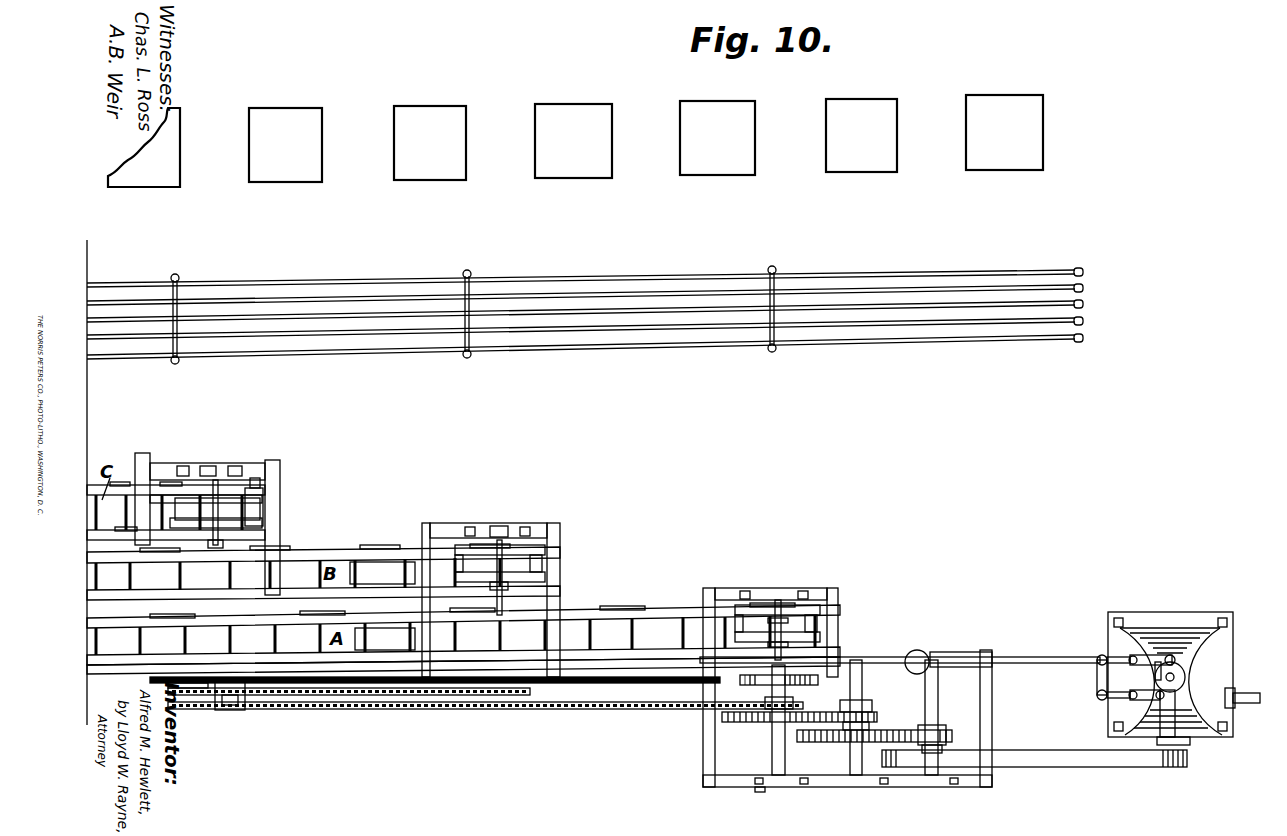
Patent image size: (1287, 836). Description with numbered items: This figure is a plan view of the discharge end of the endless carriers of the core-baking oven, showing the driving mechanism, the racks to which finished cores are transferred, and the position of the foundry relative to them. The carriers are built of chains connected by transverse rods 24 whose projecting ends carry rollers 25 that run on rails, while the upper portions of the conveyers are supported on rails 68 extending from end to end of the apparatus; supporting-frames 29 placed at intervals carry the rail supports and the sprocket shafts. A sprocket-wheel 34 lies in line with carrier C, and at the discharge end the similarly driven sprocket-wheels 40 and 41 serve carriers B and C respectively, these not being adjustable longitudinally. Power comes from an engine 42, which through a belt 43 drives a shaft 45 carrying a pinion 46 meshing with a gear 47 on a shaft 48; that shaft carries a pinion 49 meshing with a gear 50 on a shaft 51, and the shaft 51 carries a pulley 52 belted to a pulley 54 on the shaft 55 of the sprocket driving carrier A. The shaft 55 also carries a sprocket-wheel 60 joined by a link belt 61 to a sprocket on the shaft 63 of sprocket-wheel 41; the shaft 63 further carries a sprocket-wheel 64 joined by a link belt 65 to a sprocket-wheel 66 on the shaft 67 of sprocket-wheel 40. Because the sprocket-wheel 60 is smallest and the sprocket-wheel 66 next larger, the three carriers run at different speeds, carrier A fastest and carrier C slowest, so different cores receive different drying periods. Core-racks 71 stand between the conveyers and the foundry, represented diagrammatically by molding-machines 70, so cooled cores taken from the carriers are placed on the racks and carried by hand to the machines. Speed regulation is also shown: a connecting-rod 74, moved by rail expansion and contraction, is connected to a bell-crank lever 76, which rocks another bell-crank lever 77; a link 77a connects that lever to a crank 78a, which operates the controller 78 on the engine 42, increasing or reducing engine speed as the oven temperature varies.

The molding-machines 70 is at (575, 141).
The core-racks 71 is at (337, 300).
The supporting-frames 29 is at (258, 462).
The rollers 25 is at (128, 482).
The transverse rods 24 is at (176, 508).
The rails 68 is at (105, 540).
The shaft 63 is at (212, 578).
The sprocket-wheel 64 is at (238, 697).
The link belt 61 is at (380, 703).
The link belt 65 is at (412, 695).
The sprocket-wheel 66 is at (535, 690).
The sprocket-wheel 41 is at (265, 503).
The sprocket-wheel 40 is at (552, 568).
The shaft 67 is at (502, 604).
The sprocket-wheel 34 is at (808, 640).
The shaft 55 is at (768, 625).
The connecting-rod 74 is at (300, 672).
The pulley 54 is at (740, 681).
The sprocket-wheel 60 is at (793, 703).
The gear 50 is at (755, 722).
The shaft 51 is at (772, 748).
The pulley 52 is at (778, 787).
The gear 47 is at (875, 733).
The pinion 49 is at (872, 712).
The shaft 48 is at (862, 692).
The shaft 45 is at (938, 700).
The pinion 46 is at (946, 735).
The belt 43 is at (1040, 750).
The engine 42 is at (1195, 650).
The controller 78 is at (1186, 685).
The crank 78a is at (1178, 665).
The bell-crank lever 76 is at (1097, 684).
The bell-crank lever 77 is at (1132, 680).
The link 77a is at (1158, 660).